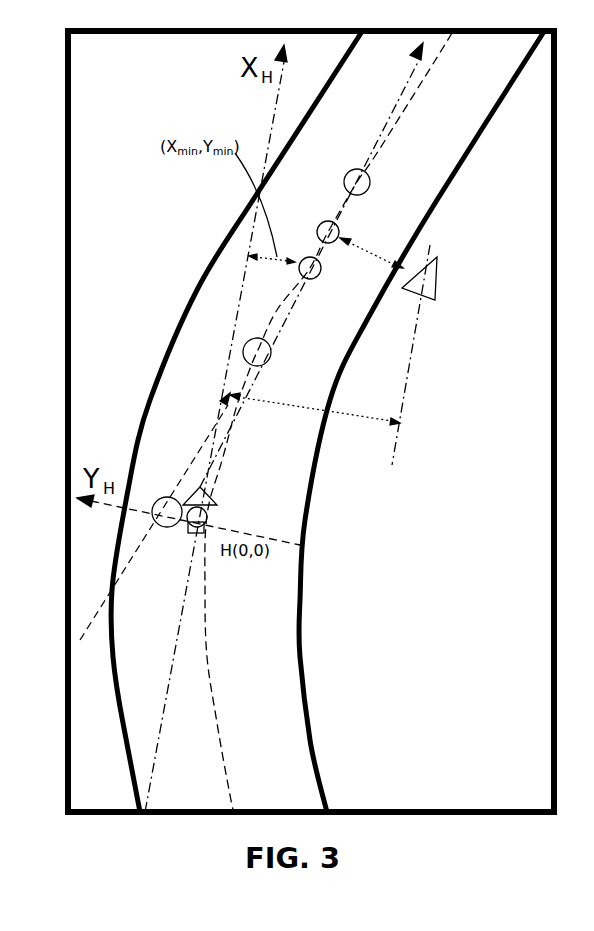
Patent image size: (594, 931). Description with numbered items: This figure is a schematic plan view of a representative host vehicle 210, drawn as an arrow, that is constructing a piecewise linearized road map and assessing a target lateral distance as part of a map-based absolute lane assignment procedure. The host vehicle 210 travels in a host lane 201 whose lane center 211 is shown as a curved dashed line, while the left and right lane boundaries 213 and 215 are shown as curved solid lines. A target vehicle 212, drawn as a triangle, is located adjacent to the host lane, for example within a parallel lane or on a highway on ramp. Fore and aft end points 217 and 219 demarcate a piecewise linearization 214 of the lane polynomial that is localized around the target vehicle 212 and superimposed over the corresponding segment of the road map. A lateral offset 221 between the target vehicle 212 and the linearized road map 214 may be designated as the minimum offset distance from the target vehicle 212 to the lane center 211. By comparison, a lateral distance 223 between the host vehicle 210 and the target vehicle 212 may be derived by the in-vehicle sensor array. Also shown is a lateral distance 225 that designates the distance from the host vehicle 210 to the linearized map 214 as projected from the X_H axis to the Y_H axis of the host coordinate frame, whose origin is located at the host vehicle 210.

The host lane 201 is at (124, 150).
The host vehicle 210 is at (222, 497).
The lane center 211 is at (207, 675).
The target vehicle 212 is at (440, 268).
The left lane boundary 213 is at (310, 747).
The piecewise linearization 214 is at (204, 433).
The right lane boundary 215 is at (220, 250).
The fore end point 217 is at (372, 177).
The aft end point 219 is at (272, 347).
The lateral offset 221 is at (375, 250).
The lateral distance 223 is at (385, 408).
The lateral distance 225 is at (313, 232).